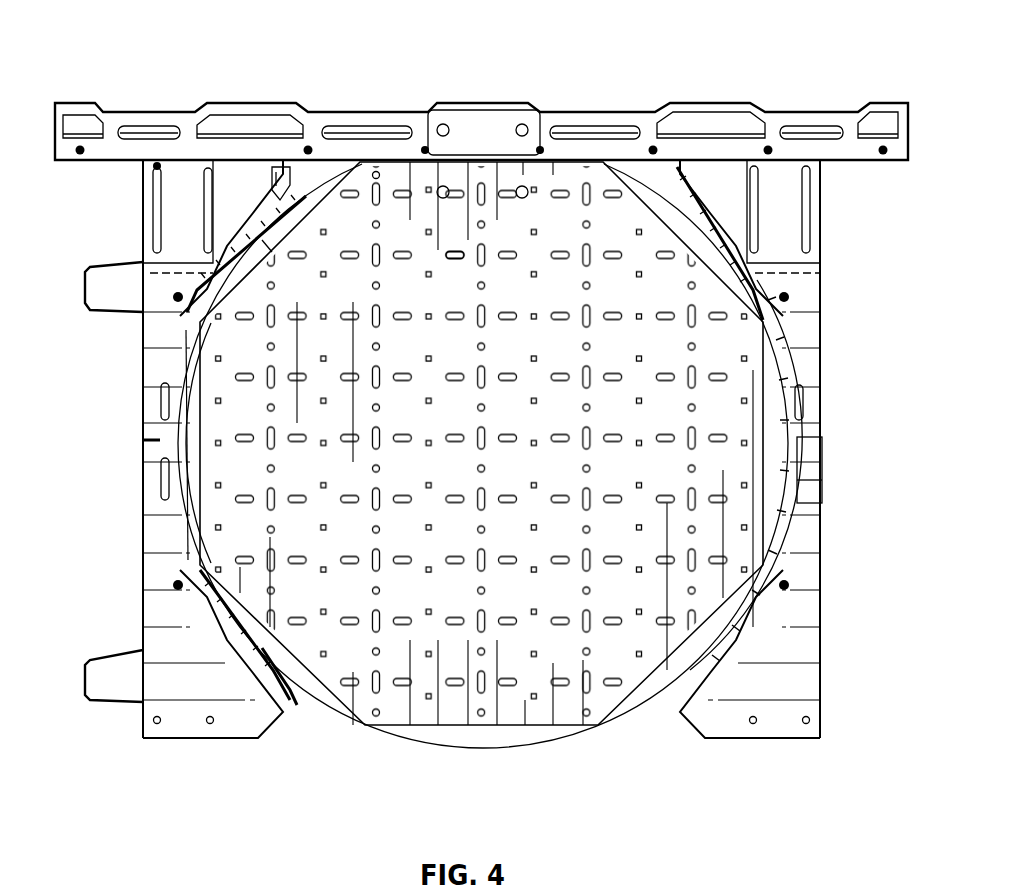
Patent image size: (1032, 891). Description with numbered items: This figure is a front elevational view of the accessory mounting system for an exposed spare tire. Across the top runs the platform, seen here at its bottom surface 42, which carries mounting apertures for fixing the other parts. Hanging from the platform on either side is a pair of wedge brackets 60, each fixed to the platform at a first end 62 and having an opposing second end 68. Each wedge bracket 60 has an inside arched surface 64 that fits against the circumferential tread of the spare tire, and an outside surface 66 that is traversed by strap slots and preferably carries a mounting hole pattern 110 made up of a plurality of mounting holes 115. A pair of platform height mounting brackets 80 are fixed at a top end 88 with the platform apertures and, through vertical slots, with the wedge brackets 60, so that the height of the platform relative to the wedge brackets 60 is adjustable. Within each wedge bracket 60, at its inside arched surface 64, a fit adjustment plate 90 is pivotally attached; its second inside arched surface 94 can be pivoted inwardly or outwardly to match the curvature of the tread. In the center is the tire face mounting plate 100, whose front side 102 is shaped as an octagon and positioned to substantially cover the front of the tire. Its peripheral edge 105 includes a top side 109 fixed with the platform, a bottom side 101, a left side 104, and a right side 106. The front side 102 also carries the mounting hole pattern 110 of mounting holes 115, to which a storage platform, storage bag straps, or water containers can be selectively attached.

The bottom surface 42 is at (860, 163).
The wedge bracket 60 is at (160, 330).
The first end 62 is at (145, 300).
The inside arched surface 64 is at (190, 358).
The outside surface 66 is at (145, 585).
The second end 68 is at (150, 433).
The platform height mounting bracket 80 is at (180, 208).
The top end 88 is at (157, 187).
The fit adjustment plate 90 is at (277, 197).
The second inside arched surface 94 is at (283, 232).
The tire face mounting plate 100 is at (482, 372).
The bottom side 101 is at (492, 727).
The front side 102 is at (587, 207).
The left side 104 is at (160, 400).
The peripheral edge 105 is at (267, 247).
The right side 106 is at (775, 437).
The top side 109 is at (546, 156).
The mounting hole pattern 110 is at (485, 230).
The mounting hole 115 is at (453, 247).